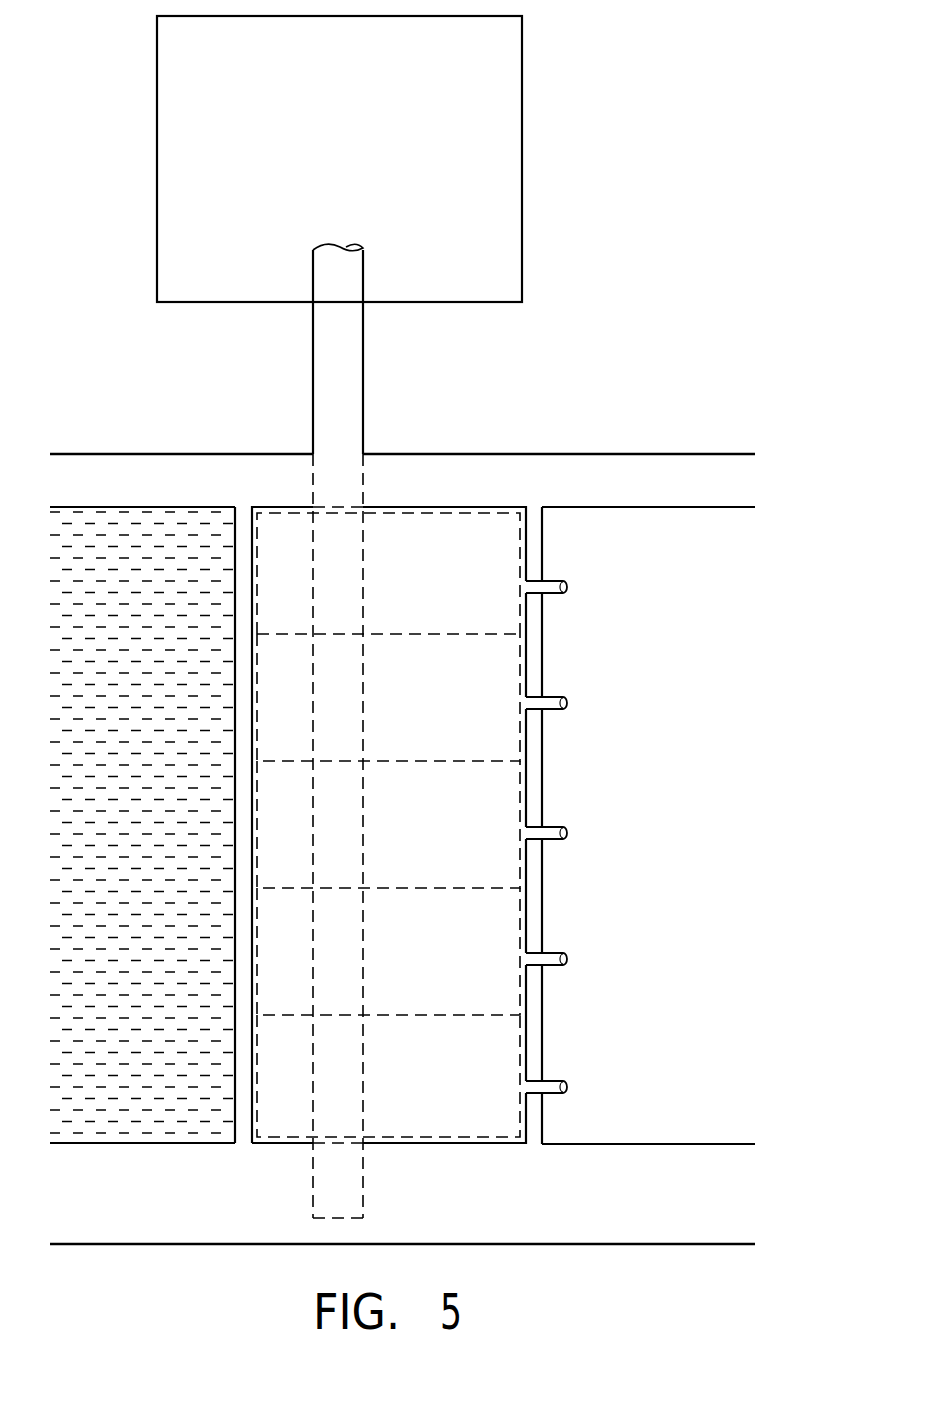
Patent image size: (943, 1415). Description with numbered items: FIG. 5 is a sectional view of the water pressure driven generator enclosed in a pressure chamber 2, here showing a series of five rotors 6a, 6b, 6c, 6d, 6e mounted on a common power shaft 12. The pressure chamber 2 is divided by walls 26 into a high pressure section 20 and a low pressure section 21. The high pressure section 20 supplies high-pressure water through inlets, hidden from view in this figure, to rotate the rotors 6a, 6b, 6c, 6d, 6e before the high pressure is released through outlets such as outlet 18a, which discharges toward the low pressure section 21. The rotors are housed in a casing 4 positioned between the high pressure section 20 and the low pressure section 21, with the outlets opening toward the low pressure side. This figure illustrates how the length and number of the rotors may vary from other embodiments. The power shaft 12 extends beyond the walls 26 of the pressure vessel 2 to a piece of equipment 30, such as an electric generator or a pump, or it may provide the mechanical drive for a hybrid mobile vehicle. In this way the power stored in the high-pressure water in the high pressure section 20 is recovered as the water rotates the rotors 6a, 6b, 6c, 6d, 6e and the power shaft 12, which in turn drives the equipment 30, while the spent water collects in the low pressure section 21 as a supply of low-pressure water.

The pressure chamber 2 is at (594, 440).
The casing / housing 4 is at (542, 560).
The rotor 6a is at (428, 1117).
The rotor 6b is at (428, 985).
The rotor 6c is at (428, 864).
The rotor 6d is at (428, 728).
The rotor 6e is at (428, 607).
The power shaft 12 is at (363, 425).
The outlet 18a is at (566, 1081).
The high pressure section 20 is at (146, 842).
The low pressure section 21 is at (702, 760).
The walls 26 is at (124, 493).
The piece of equipment 30 is at (454, 225).